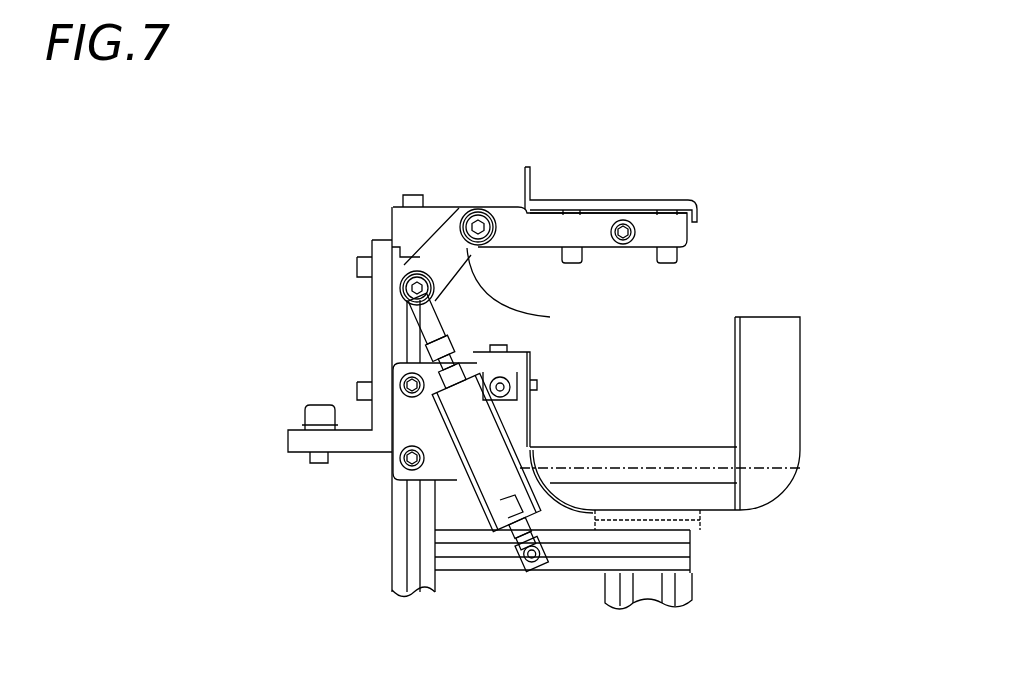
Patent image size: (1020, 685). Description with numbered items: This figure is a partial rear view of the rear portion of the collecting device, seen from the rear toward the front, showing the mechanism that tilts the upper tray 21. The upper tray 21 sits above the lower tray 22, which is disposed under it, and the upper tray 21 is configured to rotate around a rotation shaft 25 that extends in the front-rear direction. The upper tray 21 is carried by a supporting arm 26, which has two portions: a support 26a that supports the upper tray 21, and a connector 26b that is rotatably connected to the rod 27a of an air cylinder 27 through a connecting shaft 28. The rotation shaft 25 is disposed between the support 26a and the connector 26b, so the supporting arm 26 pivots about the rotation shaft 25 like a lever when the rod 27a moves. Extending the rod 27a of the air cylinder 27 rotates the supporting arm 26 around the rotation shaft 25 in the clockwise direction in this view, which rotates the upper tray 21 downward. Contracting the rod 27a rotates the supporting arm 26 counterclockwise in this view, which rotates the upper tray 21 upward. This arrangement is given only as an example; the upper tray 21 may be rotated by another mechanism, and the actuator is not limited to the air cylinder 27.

The upper tray 21 is at (645, 203).
The lower tray 22 is at (687, 447).
The rotation shaft 25 is at (478, 222).
The supporting arm 26 is at (660, 265).
The support 26a is at (605, 249).
The connector 26b is at (550, 317).
The air cylinder 27 is at (490, 497).
The rod 27a is at (430, 327).
The connecting shaft 28 is at (408, 290).